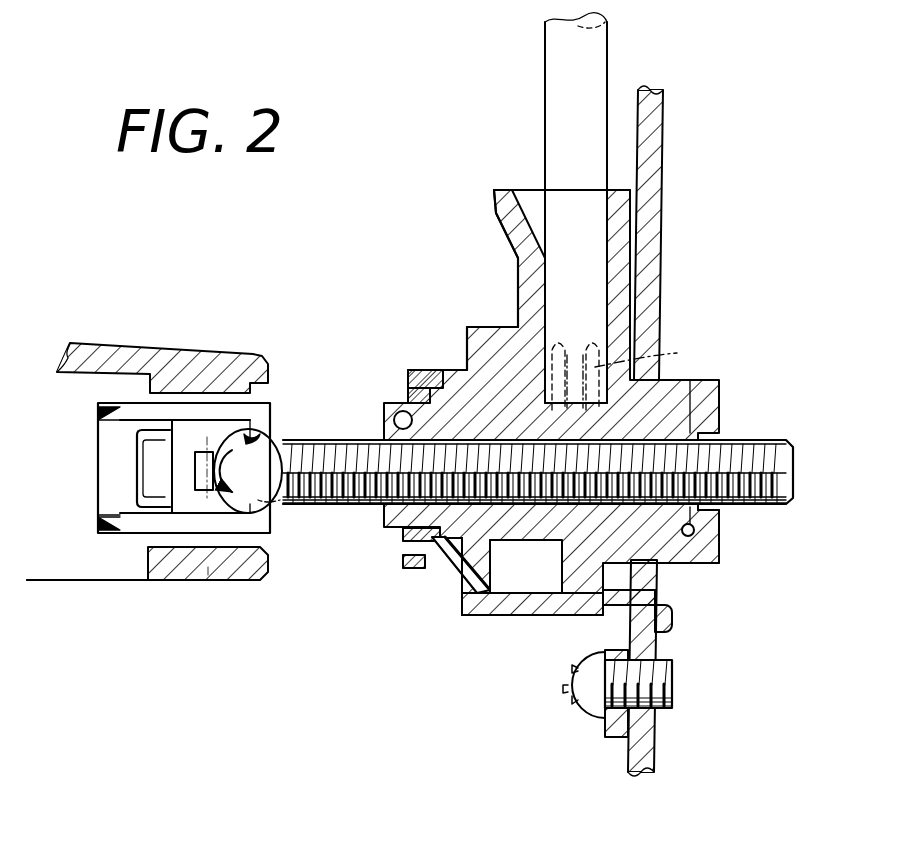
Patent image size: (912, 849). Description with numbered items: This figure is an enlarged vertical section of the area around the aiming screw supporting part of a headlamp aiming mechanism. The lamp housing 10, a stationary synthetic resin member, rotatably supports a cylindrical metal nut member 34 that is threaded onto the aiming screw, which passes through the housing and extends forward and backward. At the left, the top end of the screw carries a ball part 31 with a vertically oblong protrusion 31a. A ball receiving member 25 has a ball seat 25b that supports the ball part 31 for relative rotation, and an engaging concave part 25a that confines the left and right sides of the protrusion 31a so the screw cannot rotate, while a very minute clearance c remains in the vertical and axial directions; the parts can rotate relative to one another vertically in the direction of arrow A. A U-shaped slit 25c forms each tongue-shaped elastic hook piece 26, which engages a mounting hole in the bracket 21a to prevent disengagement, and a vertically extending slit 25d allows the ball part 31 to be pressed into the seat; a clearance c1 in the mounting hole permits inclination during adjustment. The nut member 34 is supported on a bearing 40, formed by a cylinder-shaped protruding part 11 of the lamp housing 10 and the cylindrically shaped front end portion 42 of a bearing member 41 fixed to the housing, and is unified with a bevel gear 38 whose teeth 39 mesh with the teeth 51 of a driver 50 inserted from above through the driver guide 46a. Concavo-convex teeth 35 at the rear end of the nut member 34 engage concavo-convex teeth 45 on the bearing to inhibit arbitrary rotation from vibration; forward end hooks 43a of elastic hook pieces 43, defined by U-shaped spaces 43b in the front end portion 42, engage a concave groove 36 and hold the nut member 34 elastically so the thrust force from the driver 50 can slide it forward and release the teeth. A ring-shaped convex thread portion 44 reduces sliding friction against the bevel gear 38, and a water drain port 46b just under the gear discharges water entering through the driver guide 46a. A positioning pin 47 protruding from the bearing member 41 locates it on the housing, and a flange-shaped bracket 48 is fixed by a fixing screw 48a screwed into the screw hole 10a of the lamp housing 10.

The lamp housing 10 is at (652, 172).
The screw hole 10a is at (673, 692).
The cylinder-shaped protruding part 11 is at (660, 604).
The bracket 21a is at (193, 450).
The ball receiving member 25 is at (155, 570).
The engaging concave part 25a is at (193, 447).
The ball seat 25b is at (267, 433).
The U-shaped slit 25c is at (195, 478).
The vertically extending slit 25d is at (125, 570).
The elastic hook piece 26 is at (147, 460).
The ball part 31 is at (247, 567).
The protrusion 31a is at (78, 560).
The nut member 34 is at (660, 423).
The concavo-convex teeth 35 is at (695, 527).
The concave groove 36 is at (404, 413).
The bevel gear 38 is at (510, 335).
The teeth 39 is at (562, 397).
The bearing 40 is at (441, 583).
The bearing member 41 is at (454, 565).
The cylindrically shaped front end portion 42 is at (476, 580).
The elastic hook piece 43 is at (410, 370).
The forward end hook 43a is at (413, 417).
The space 43b is at (436, 370).
The convex thread portion 44 is at (520, 574).
The concavo-convex teeth 45 is at (701, 565).
The driver guide 46a is at (517, 249).
The water drain port 46b is at (558, 607).
The positioning pin 47 is at (677, 622).
The flange-shaped bracket 48 is at (620, 732).
The fixing screw 48a is at (599, 705).
The driver 50 is at (545, 90).
The teeth 51 is at (677, 353).
The arrow A is at (503, 471).
The clearance c is at (213, 430).
The clearance c1 is at (208, 567).